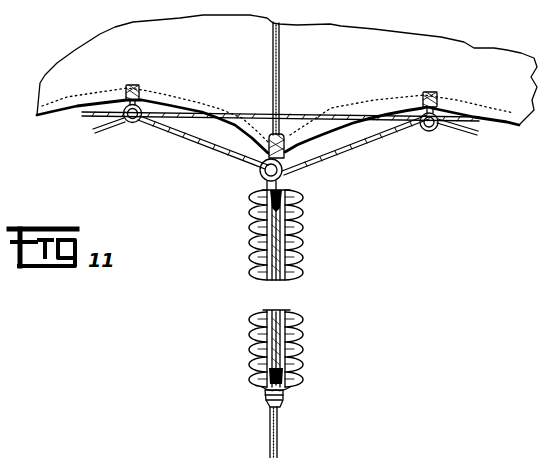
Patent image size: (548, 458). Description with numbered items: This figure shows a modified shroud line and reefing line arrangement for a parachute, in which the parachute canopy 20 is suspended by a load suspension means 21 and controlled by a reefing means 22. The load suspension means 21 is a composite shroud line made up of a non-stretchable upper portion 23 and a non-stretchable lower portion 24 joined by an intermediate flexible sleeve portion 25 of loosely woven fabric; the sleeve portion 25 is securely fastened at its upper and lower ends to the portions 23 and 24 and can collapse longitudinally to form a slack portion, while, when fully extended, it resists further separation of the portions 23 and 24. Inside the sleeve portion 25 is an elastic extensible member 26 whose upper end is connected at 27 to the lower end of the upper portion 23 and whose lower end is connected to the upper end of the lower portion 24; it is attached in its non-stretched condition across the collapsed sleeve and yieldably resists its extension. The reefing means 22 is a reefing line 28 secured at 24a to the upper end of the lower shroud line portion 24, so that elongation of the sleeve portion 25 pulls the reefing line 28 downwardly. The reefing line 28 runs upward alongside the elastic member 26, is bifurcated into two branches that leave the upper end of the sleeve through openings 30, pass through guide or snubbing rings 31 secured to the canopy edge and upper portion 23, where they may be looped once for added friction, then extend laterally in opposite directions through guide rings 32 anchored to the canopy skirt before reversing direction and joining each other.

The parachute canopy 20 is at (387, 35).
The load suspension means 21 is at (319, 283).
The reefing means 22 is at (98, 128).
The upper shroud line portion 23 is at (279, 53).
The lower shroud line portion 24 is at (278, 429).
The reefing line securing point 24a is at (300, 381).
The flexible sleeve portion 25 is at (300, 232).
The elastic extensible member 26 is at (268, 253).
The upper connection of elastic member 27 is at (284, 398).
The reefing line 28 is at (300, 326).
The openings 30 is at (283, 176).
The guide or snubbing rings 31 is at (292, 150).
The guide rings 32 is at (131, 124).